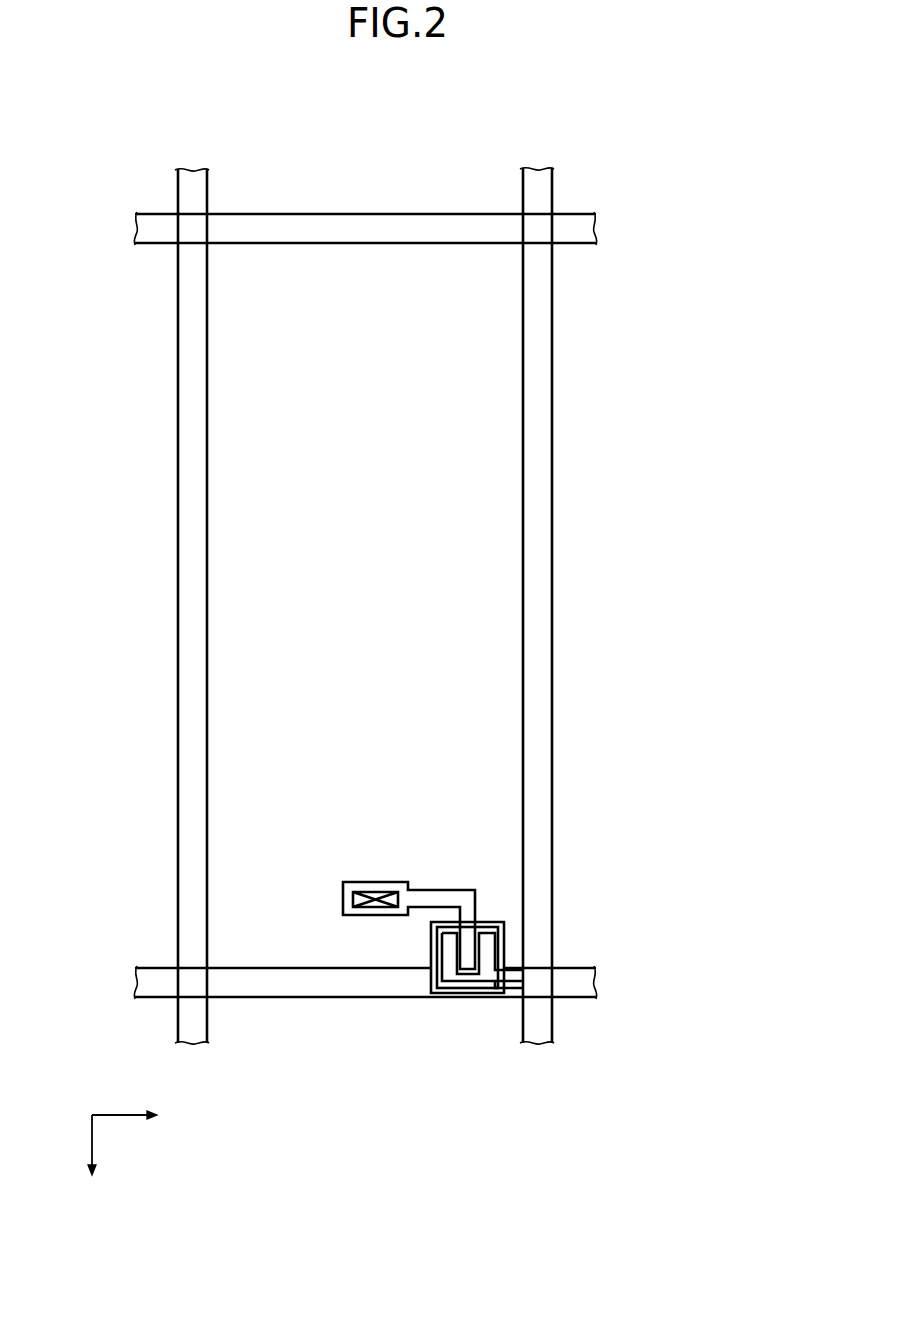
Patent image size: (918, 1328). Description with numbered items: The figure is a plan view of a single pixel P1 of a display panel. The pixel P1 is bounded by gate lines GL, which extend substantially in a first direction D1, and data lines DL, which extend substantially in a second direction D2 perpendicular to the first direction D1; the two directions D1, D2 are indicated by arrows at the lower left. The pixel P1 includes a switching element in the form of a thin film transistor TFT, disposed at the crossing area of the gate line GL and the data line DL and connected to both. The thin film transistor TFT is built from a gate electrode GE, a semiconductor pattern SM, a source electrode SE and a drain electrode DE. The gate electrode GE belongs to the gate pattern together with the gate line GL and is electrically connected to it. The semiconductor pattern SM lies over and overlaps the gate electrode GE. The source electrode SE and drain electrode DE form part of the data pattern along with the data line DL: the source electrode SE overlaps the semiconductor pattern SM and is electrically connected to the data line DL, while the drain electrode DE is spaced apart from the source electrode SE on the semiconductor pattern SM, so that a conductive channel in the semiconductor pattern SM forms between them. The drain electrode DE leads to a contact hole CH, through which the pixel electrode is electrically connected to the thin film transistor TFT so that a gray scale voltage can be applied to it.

The first pixel P1 is at (283, 142).
The data line DL is at (537, 168).
The gate line GL is at (135, 228).
The thin film transistor TFT is at (433, 1019).
The gate electrode GE is at (431, 946).
The semiconductor pattern SM is at (490, 988).
The source electrode SE is at (448, 982).
The drain electrode DE is at (470, 970).
The contact hole CH is at (376, 892).
The first direction D1 is at (137, 1115).
The second direction D2 is at (92, 1161).